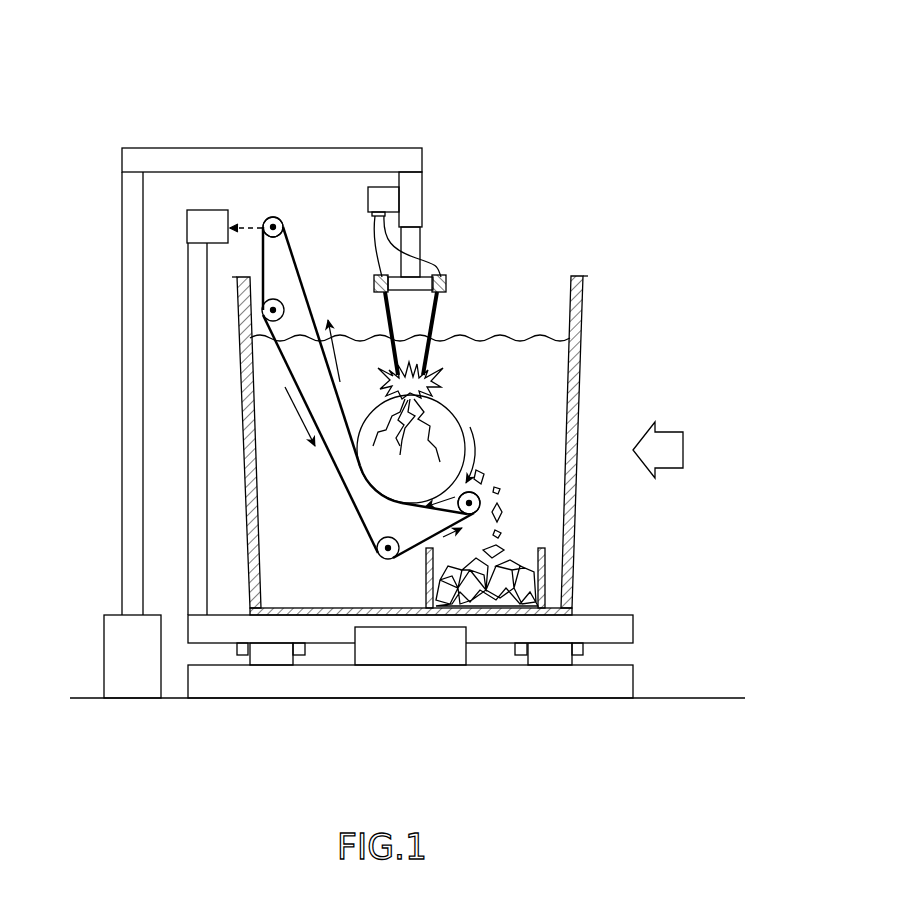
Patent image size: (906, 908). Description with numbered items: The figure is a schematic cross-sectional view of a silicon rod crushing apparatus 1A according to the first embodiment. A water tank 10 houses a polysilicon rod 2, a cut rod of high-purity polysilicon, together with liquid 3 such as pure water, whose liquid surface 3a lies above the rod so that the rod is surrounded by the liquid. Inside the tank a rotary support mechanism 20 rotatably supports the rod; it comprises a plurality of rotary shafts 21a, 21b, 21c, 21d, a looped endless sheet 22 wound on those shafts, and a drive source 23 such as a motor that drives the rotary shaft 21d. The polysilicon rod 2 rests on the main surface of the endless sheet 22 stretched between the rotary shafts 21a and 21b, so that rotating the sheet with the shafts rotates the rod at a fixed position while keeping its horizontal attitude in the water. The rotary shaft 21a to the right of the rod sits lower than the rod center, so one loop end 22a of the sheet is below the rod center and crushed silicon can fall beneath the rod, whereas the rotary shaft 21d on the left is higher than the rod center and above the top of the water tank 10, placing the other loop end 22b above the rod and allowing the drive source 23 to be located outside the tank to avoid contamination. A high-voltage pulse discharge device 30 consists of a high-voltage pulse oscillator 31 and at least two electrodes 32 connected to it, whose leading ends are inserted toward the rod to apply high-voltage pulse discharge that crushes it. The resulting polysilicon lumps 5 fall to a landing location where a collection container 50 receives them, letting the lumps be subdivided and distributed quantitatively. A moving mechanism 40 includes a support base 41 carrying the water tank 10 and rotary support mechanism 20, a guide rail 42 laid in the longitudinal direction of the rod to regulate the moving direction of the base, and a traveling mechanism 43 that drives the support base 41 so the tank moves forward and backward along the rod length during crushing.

The silicon rod crushing apparatus 1A is at (372, 74).
The polysilicon rod 2 is at (451, 416).
The liquid 3 is at (529, 408).
The liquid surface 3a is at (515, 337).
The polysilicon lumps 5 is at (517, 553).
The water tank 10 is at (576, 376).
The rotary support mechanism 20 is at (346, 523).
The rotary shaft 21a is at (481, 503).
The rotary shaft 21b is at (379, 560).
The rotary shaft 21c is at (283, 308).
The rotary shaft 21d is at (265, 219).
The endless sheet 22 is at (291, 244).
The loop end 22a is at (478, 497).
The loop end 22b is at (284, 221).
The drive source 23 is at (187, 228).
The high-voltage pulse discharge device 30 is at (460, 264).
The high-voltage pulse oscillator 31 is at (383, 190).
The electrodes 32 is at (389, 322).
The moving mechanism 40 is at (652, 610).
The support base 41 is at (633, 628).
The guide rail 42 is at (583, 652).
The traveling mechanism 43 is at (467, 655).
The collection container 50 is at (545, 568).